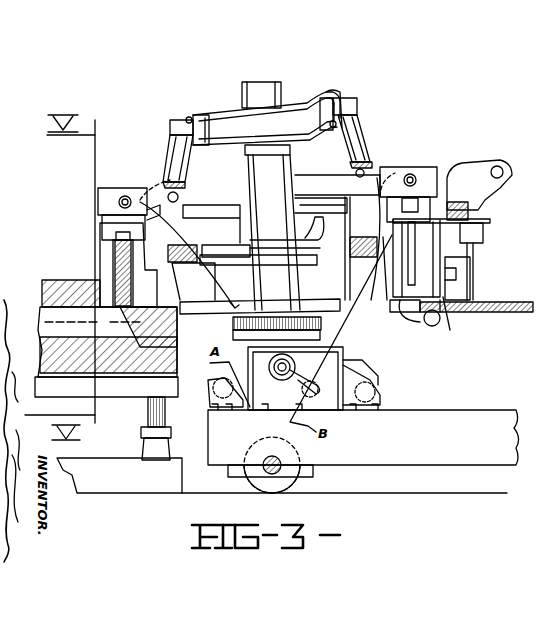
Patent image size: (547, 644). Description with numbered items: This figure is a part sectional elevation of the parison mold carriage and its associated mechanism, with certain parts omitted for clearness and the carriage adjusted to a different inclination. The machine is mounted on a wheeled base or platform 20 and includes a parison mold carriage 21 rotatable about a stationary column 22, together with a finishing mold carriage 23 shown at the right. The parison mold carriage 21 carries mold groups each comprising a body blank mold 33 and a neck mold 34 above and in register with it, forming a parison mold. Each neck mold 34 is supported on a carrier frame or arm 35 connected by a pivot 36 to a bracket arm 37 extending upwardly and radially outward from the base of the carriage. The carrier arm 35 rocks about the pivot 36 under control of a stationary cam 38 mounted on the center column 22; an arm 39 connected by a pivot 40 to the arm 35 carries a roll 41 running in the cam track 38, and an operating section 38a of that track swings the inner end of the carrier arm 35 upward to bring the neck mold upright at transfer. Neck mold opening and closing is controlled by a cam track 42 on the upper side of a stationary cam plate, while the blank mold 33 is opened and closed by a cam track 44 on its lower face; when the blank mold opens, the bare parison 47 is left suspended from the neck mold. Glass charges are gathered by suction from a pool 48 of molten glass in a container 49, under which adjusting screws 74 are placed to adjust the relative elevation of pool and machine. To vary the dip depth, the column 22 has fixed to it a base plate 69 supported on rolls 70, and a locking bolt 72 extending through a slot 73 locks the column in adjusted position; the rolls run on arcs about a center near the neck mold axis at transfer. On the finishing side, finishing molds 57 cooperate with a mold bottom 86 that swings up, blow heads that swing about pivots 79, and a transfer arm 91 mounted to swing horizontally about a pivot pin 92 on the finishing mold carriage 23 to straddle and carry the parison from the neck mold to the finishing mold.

The wheeled base or platform 20 is at (462, 422).
The parison mold carriage 21 is at (340, 318).
The stationary column 22 is at (268, 82).
The finishing mold carriage 23 is at (475, 312).
The body blank mold 33 is at (146, 297).
The neck mold 34 is at (100, 221).
The carrier frame or arm 35 is at (118, 192).
The pivot 36 is at (130, 196).
The bracket arm 37 is at (214, 284).
The stationary cam 38 is at (216, 116).
The operating section of cam track 38a is at (326, 95).
The arm 39 is at (184, 162).
The pivot 40 is at (179, 198).
The roll 41 is at (188, 119).
The cam track 42 is at (320, 230).
The cam track 44 is at (222, 262).
The parison 47 is at (393, 303).
The pool of molten glass 48 is at (60, 312).
The container 49 is at (170, 335).
The finishing mold 57 is at (447, 325).
The base plate 69 is at (380, 387).
The rolls 70 is at (210, 392).
The locking bolt 72 is at (295, 367).
The slot 73 is at (292, 380).
The adjusting screws 74 is at (148, 408).
The pivot 79 is at (502, 175).
The mold bottom 86 is at (428, 326).
The transfer arm 91 is at (470, 220).
The pivot pin 92 is at (484, 238).